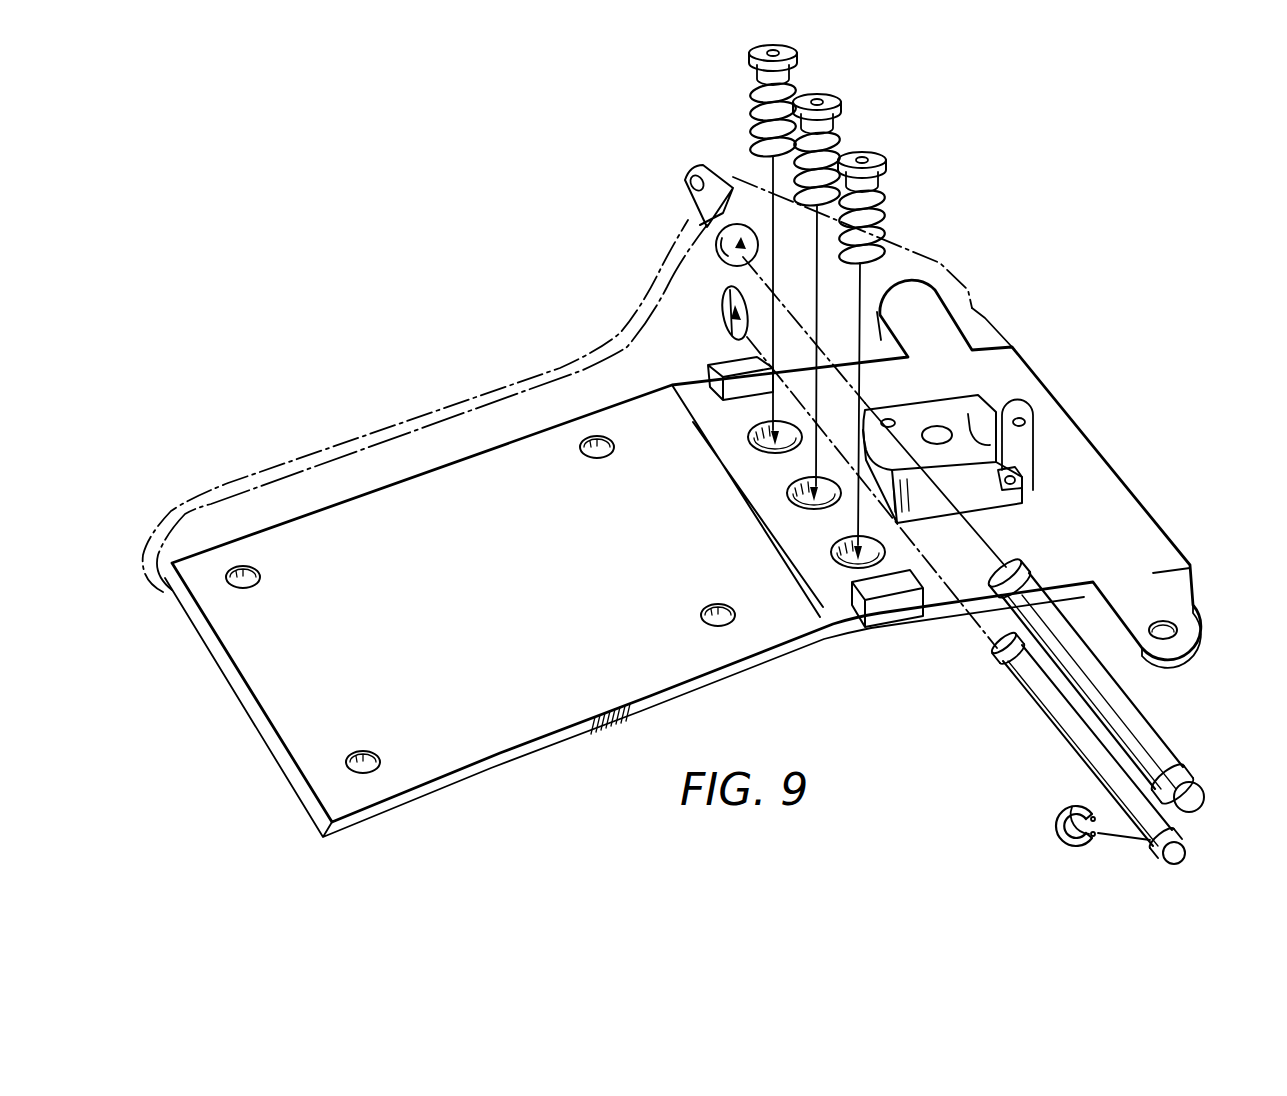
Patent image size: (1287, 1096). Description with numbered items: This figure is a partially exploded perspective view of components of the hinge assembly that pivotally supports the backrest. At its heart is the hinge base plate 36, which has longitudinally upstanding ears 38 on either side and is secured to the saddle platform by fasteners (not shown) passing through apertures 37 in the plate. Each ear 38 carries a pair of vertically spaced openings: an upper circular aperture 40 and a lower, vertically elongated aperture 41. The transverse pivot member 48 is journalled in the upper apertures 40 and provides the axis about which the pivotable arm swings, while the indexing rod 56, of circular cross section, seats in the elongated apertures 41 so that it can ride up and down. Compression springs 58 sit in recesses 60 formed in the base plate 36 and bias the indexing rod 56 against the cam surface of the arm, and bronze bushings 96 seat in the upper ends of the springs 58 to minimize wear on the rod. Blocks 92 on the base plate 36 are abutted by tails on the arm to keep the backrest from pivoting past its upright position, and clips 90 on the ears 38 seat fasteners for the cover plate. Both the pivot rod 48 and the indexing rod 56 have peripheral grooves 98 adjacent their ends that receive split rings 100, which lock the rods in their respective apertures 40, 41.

The base plate 36 is at (623, 657).
The apertures 37 is at (377, 765).
The ears 38 is at (905, 256).
The aperture 40 is at (715, 244).
The aperture 41 is at (717, 308).
The pivot member 48 is at (1143, 727).
The indexing rod 56 is at (1057, 720).
The compression springs 58 is at (882, 190).
The recesses 60 is at (837, 500).
The clips 90 is at (703, 143).
The blocks 92 is at (710, 365).
The bronze bushings 96 is at (840, 106).
The peripheral grooves 98 is at (998, 660).
The split rings 100 is at (1084, 850).